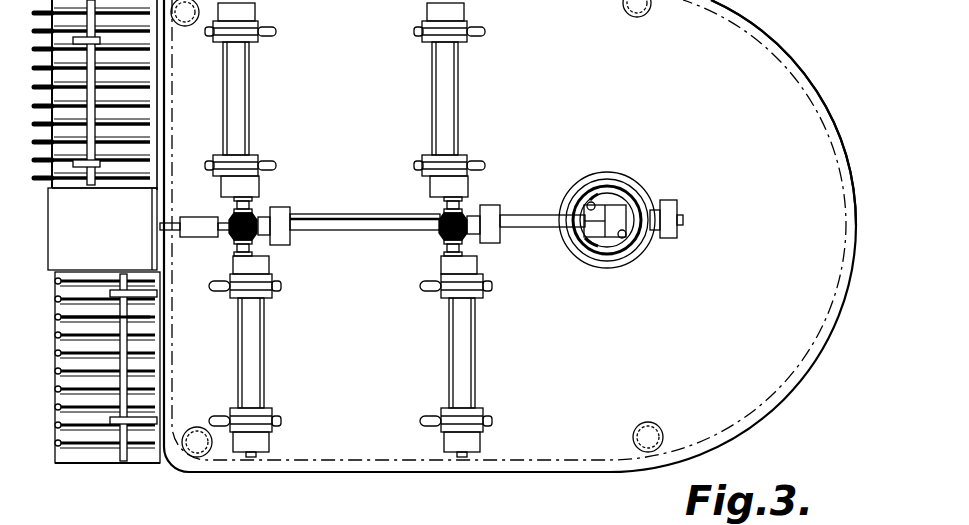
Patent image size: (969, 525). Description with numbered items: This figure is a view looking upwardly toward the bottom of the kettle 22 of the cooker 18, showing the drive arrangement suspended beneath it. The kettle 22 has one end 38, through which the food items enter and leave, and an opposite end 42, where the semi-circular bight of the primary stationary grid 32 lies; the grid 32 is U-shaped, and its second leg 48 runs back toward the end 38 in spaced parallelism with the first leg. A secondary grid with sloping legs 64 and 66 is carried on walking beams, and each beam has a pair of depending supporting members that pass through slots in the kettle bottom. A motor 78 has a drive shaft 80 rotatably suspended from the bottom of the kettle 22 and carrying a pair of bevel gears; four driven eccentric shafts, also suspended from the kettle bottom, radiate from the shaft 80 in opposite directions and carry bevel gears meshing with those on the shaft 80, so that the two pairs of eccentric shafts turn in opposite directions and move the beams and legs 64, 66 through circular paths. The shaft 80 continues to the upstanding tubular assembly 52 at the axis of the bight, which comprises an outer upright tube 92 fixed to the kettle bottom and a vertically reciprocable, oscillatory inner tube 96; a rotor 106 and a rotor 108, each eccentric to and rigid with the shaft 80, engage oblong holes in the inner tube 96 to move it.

The cooker 18 is at (612, 480).
The kettle 22 is at (460, 476).
The primary stationary grid 32 is at (82, 466).
The one end of the kettle 38 is at (158, 97).
The opposite end of the kettle 42 is at (822, 95).
The second leg 48 is at (50, 388).
The upstanding tubular assembly 52 is at (614, 162).
The sloping leg 64 is at (33, 142).
The sloping leg 66 is at (62, 320).
The motor 78 is at (50, 235).
The drive shaft 80 is at (347, 231).
The outer upright tube 92 is at (640, 196).
The inner tube 96 is at (592, 248).
The rotor 106 is at (590, 194).
The rotor 108 is at (616, 248).